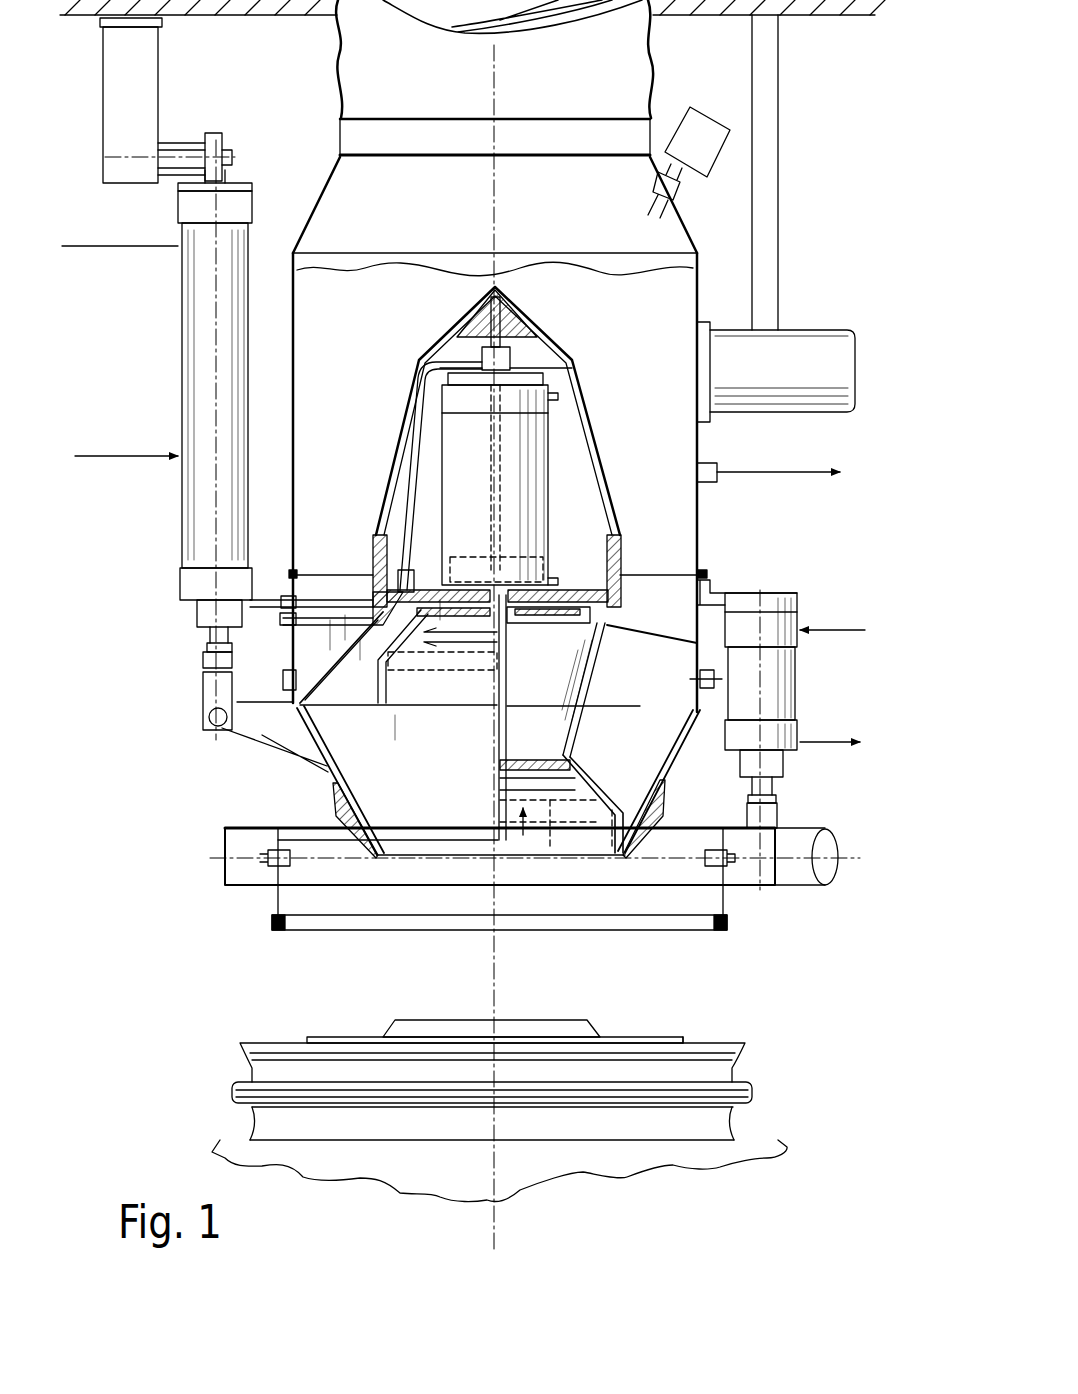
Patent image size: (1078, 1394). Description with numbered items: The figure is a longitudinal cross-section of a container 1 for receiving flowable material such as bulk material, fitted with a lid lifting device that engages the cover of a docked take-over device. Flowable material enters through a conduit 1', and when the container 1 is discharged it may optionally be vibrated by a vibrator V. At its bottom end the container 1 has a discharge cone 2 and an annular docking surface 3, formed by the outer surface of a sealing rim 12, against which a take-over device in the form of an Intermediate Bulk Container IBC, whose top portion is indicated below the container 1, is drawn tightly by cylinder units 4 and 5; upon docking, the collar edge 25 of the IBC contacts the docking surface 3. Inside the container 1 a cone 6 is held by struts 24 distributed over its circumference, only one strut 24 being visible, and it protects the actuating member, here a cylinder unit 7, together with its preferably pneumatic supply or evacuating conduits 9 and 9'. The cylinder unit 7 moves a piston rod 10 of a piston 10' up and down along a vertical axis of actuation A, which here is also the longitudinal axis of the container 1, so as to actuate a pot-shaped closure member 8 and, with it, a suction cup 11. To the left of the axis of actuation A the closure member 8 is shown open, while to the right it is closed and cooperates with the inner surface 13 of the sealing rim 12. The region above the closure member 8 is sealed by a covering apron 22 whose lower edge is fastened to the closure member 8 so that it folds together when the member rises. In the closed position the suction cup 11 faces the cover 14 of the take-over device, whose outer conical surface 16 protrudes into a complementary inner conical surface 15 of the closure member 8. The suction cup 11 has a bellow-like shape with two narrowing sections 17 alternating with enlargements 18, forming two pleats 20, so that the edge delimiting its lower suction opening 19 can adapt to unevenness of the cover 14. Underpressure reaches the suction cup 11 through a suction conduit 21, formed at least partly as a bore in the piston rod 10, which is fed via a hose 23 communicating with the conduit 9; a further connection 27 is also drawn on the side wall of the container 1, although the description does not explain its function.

The container 1 is at (486, 398).
The conduit 1' is at (518, 77).
The discharge cone 2 is at (327, 768).
The annular docking surface 3 is at (375, 840).
The cylinder unit 4 is at (185, 350).
The cylinder unit 5 is at (800, 685).
The cone 6 is at (468, 310).
The cylinder unit 7 is at (535, 448).
The pot-shaped closure member 8 is at (372, 685).
The fluidic supply and/or evacuating conduit 9 is at (278, 561).
The fluidic supply and/or evacuating conduit 9' is at (267, 650).
The piston rod 10 is at (526, 717).
The piston 10' is at (523, 483).
The suction cup 11 is at (523, 840).
The sealing rim 12 is at (345, 820).
The inner surface 13 is at (375, 835).
The cover 14 is at (418, 640).
The inner conical surface 15 is at (600, 800).
The outer conical surface 16 is at (607, 845).
The narrowing section 17 is at (555, 810).
The enlargement 18 is at (395, 685).
The suction opening 19 is at (465, 657).
The pleat 20 is at (595, 755).
The suction conduit 21 is at (505, 633).
The covering apron 22 is at (358, 595).
The hose 23 is at (410, 468).
The strut 24 is at (328, 680).
The collar edge 25 is at (676, 1038).
The outlet connection 27 is at (783, 475).
The axis of actuation A is at (497, 88).
The vibrator V is at (815, 345).
The Intermediate Bulk Container IBC is at (233, 1063).